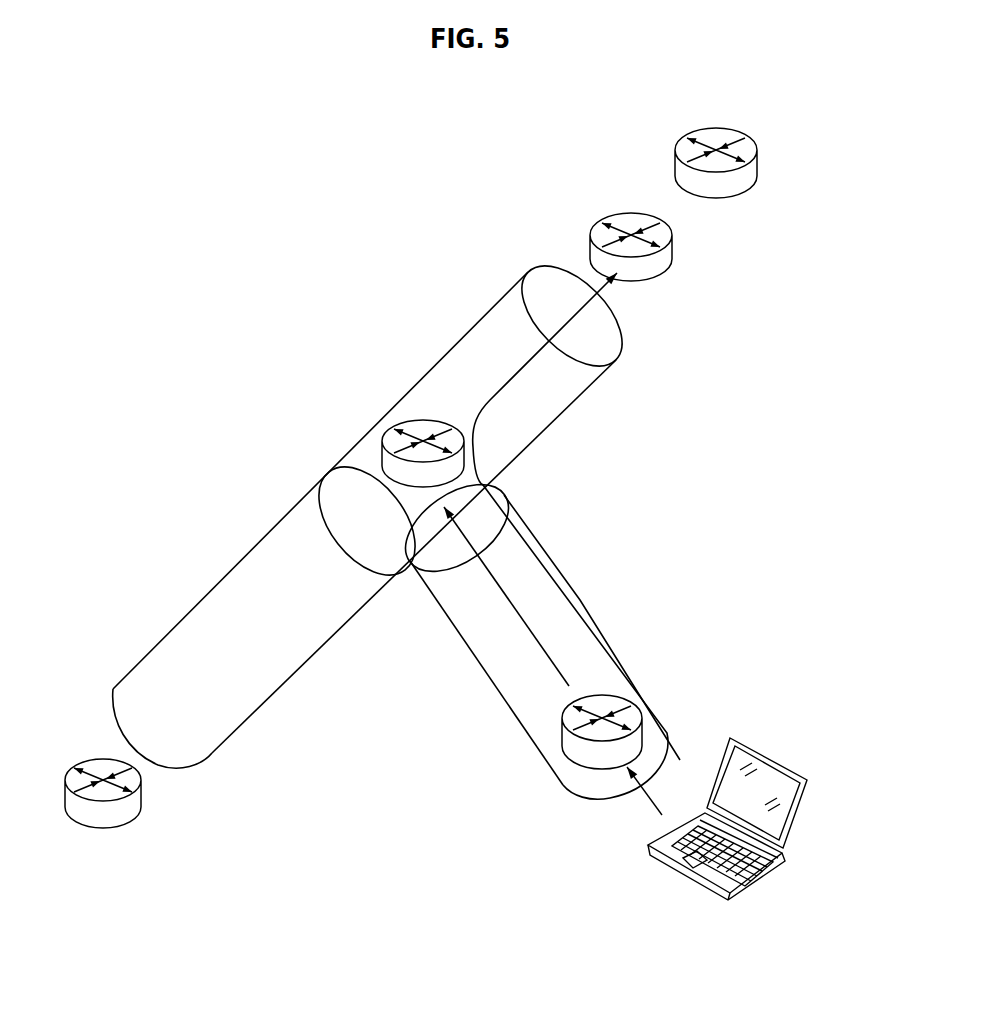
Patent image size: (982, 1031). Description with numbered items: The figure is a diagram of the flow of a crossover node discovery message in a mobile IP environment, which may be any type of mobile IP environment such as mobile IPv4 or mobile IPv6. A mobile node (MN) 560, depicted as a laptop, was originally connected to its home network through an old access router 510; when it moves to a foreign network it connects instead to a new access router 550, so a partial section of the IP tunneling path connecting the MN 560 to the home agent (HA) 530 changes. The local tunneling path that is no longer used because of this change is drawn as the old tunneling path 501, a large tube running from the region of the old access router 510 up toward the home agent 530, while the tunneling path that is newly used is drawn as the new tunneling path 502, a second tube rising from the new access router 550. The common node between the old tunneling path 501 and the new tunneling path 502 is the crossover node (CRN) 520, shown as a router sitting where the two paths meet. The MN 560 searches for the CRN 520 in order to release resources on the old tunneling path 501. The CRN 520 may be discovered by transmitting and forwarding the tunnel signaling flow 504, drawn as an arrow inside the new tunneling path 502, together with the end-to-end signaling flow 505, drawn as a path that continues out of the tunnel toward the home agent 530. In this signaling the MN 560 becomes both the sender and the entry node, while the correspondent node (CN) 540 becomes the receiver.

The old tunneling path 501 is at (223, 580).
The new tunneling path 502 is at (558, 567).
The tunnel signaling flow 504 is at (510, 602).
The end-to-end signaling flow 505 is at (601, 643).
The old access router 510 is at (142, 795).
The crossover node (CRN) 520 is at (425, 420).
The home agent (HA) 530 is at (672, 248).
The correspondent node (CN) 540 is at (757, 165).
The new access router 550 is at (562, 735).
The mobile node (MN) 560 is at (803, 797).